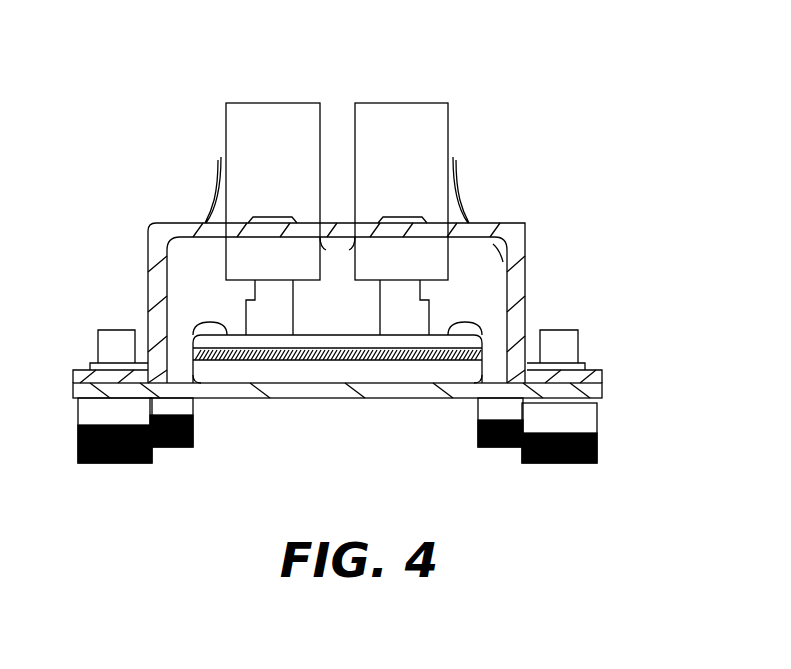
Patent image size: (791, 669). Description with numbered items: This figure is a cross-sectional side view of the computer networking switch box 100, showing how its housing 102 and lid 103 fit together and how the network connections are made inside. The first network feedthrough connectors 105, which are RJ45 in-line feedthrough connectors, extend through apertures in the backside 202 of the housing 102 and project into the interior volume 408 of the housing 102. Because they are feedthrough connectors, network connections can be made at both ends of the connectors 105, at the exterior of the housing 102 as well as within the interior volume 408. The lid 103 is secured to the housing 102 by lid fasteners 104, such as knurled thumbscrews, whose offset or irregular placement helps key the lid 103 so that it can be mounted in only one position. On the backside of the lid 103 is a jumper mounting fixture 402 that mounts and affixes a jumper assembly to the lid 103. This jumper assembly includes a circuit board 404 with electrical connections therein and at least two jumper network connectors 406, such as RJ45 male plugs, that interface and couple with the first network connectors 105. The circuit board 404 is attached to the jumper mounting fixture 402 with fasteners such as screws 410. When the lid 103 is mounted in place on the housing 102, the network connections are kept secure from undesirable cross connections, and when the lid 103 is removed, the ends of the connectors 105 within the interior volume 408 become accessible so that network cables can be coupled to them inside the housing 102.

The switch box 100 is at (107, 80).
The housing 102 is at (526, 249).
The lid 103 is at (335, 397).
The lid fasteners 104 is at (177, 447).
The first network feedthrough connectors 105 is at (228, 115).
The backside of the housing 202 is at (473, 226).
The jumper mounting fixture 402 is at (242, 373).
The circuit board 404 is at (484, 343).
The jumper network connectors 406 is at (265, 323).
The interior volume 408 is at (480, 251).
The screws 410 is at (212, 323).